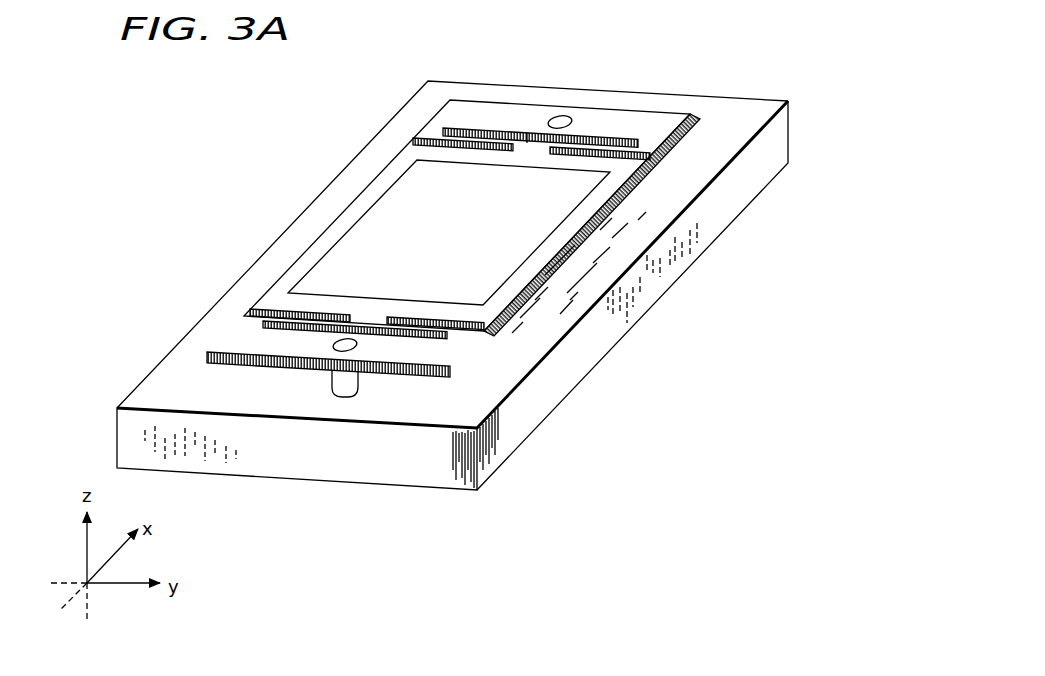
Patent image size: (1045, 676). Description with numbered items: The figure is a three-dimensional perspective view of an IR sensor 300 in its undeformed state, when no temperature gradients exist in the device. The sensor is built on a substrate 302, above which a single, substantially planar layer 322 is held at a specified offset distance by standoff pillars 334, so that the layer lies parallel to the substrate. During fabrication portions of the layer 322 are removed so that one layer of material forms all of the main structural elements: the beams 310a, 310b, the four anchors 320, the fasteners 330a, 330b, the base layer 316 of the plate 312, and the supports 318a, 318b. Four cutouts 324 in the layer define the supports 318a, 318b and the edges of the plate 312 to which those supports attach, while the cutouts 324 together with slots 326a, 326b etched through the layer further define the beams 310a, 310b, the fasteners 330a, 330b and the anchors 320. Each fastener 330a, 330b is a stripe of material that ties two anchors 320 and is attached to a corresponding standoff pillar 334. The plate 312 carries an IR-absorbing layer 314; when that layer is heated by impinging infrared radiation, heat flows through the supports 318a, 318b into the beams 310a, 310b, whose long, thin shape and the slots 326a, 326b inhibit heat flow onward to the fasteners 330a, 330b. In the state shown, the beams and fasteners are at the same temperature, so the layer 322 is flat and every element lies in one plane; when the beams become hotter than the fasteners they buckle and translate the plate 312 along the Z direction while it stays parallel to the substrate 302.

The IR sensor 300 is at (220, 83).
The substrate 302 is at (433, 467).
The beam 310a is at (459, 127).
The beam 310b is at (240, 327).
The plate 312 is at (345, 197).
The IR-absorbing layer 314 is at (487, 221).
The base layer 316 is at (577, 245).
The support 318a is at (527, 142).
The support 318b is at (370, 320).
The anchor 320 is at (432, 126).
The layer 322 is at (545, 100).
The cutout 324 is at (410, 140).
The slot 326a is at (580, 130).
The slot 326b is at (420, 322).
The fastener 330a is at (613, 123).
The fastener 330b is at (277, 343).
The standoff pillar 334 is at (333, 397).